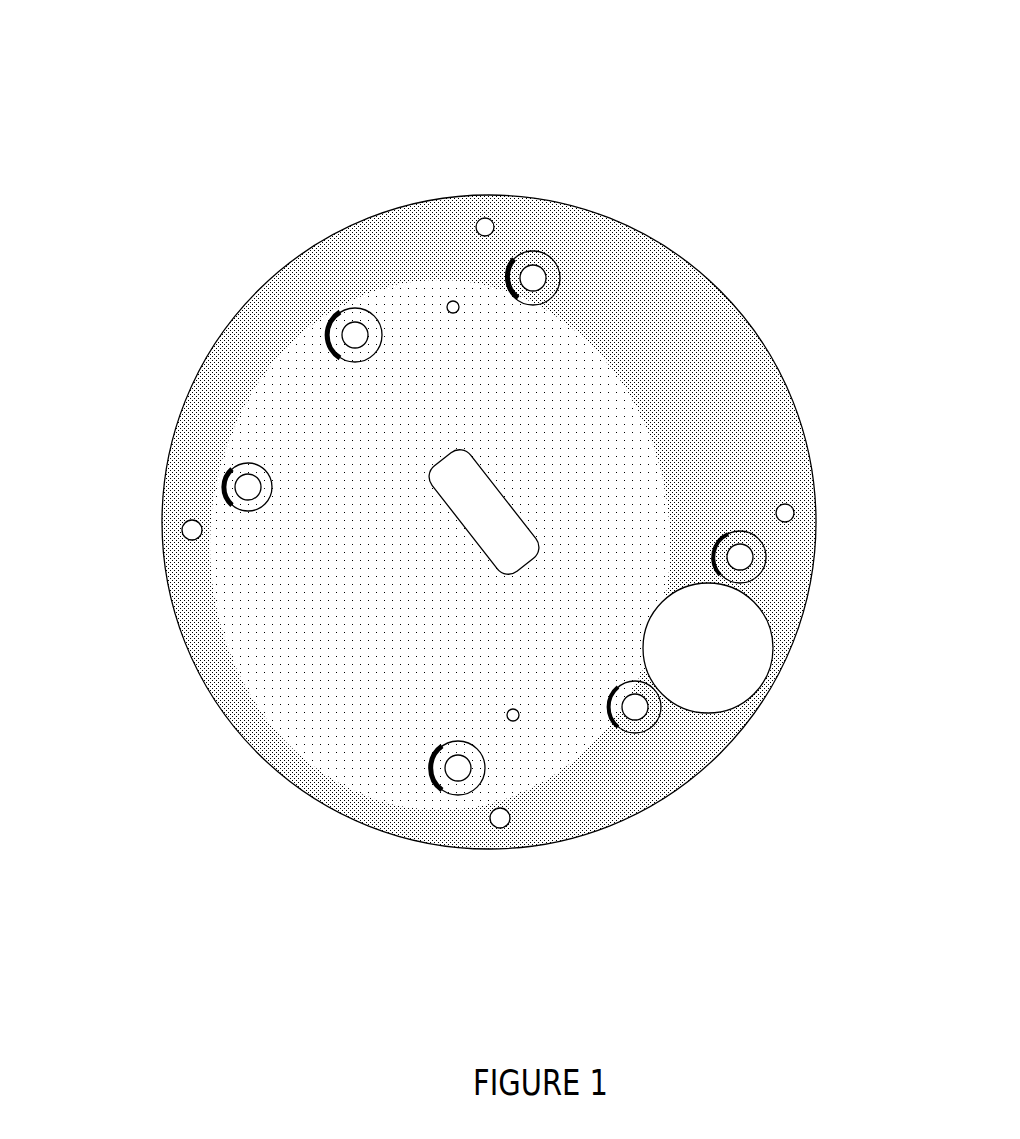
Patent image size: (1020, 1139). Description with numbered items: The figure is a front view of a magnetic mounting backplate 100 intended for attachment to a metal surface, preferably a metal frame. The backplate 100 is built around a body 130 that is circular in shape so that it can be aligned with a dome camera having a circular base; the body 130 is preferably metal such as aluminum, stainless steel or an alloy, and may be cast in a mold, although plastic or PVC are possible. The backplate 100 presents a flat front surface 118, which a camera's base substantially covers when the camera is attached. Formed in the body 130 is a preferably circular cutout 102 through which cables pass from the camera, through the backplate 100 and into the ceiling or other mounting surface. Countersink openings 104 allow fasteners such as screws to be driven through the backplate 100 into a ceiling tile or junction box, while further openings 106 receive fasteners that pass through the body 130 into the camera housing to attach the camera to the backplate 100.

The magnetic mounting backplate 100 is at (340, 125).
The cutout 102 is at (764, 686).
The countersink openings 104 is at (527, 250).
The openings 106 is at (483, 222).
The front surface 118 is at (198, 600).
The body 130 is at (613, 215).